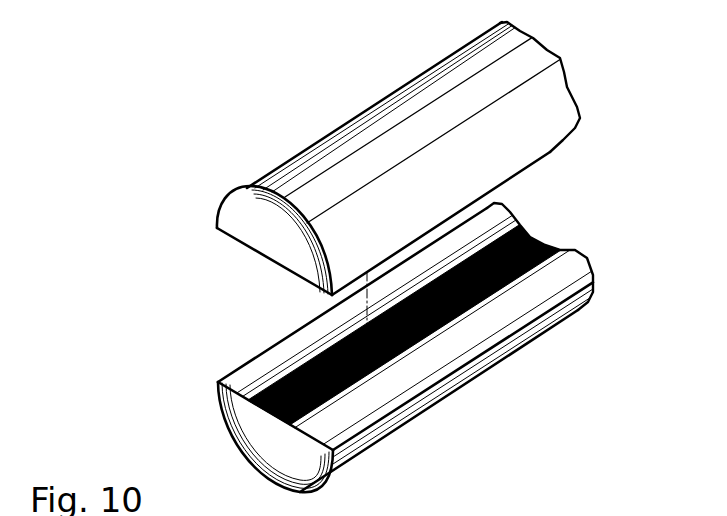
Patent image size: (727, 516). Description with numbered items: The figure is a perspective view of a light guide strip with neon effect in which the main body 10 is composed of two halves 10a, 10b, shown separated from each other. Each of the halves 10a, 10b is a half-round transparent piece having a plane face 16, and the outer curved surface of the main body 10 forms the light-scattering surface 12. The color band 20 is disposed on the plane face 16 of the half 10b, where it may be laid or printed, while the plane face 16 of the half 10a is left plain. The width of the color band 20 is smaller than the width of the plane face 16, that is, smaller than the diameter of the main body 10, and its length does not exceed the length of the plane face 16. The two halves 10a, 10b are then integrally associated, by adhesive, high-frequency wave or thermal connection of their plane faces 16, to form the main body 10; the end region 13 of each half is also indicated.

The main body 10 is at (173, 228).
The half 10a is at (302, 143).
The half 10b is at (503, 367).
The light-scattering surface 12 is at (430, 98).
The end face 13 is at (310, 267).
The plane face 16 is at (263, 256).
The color band 20 is at (532, 233).